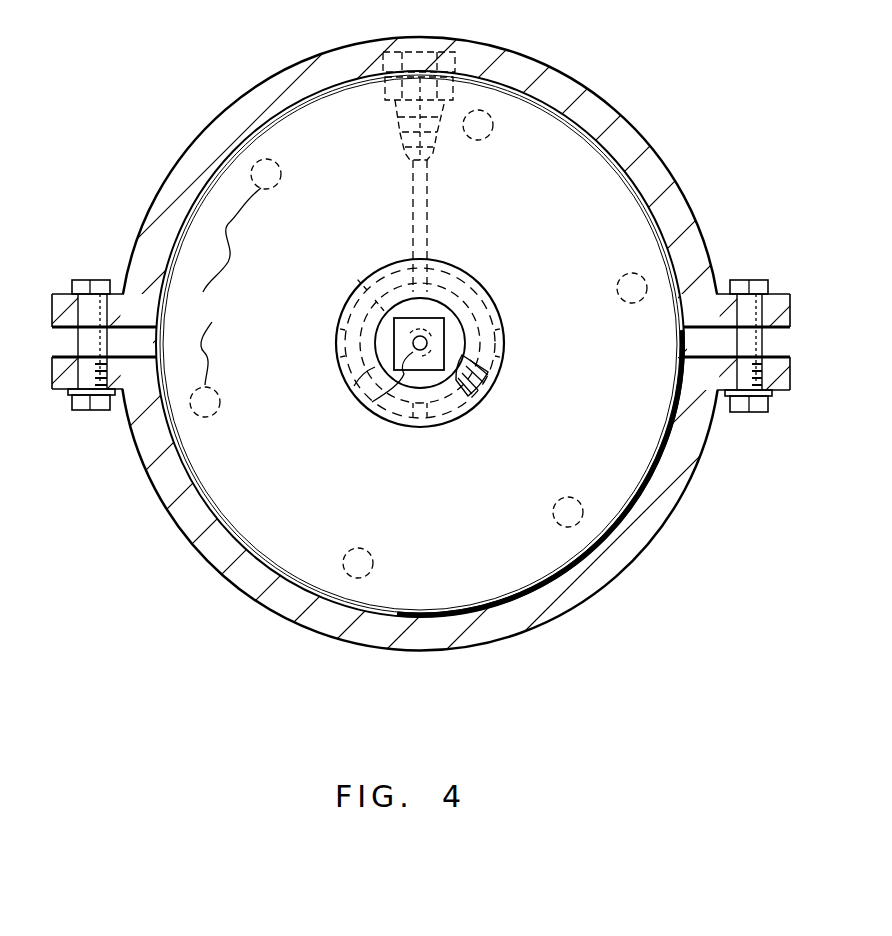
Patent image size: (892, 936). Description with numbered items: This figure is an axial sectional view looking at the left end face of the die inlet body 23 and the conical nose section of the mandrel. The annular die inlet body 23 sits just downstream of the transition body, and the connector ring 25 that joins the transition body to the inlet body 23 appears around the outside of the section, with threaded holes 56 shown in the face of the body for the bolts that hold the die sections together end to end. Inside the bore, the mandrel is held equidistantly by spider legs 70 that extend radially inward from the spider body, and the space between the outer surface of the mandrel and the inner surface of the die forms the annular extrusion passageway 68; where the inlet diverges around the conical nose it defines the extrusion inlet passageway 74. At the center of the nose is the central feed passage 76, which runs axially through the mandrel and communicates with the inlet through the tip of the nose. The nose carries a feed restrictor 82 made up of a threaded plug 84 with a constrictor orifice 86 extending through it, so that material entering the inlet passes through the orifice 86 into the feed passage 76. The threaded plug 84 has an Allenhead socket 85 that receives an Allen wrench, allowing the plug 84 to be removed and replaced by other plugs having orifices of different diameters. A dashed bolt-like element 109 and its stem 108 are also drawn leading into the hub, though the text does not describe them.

The die inlet body 23 is at (498, 557).
The connector ring 25 is at (636, 130).
The threaded holes 56 is at (229, 286).
The annular extrusion passageway 68 is at (446, 427).
The spider legs 70 is at (433, 270).
The extrusion inlet passageway 74 is at (350, 388).
The central feed passage 76 is at (410, 338).
The feed restrictor 82 is at (470, 330).
The threaded plug 84 is at (492, 397).
The Allenhead socket 85 is at (440, 318).
The constrictor orifice 86 is at (372, 402).
The stem 108 is at (428, 214).
The bolt 109 is at (455, 53).